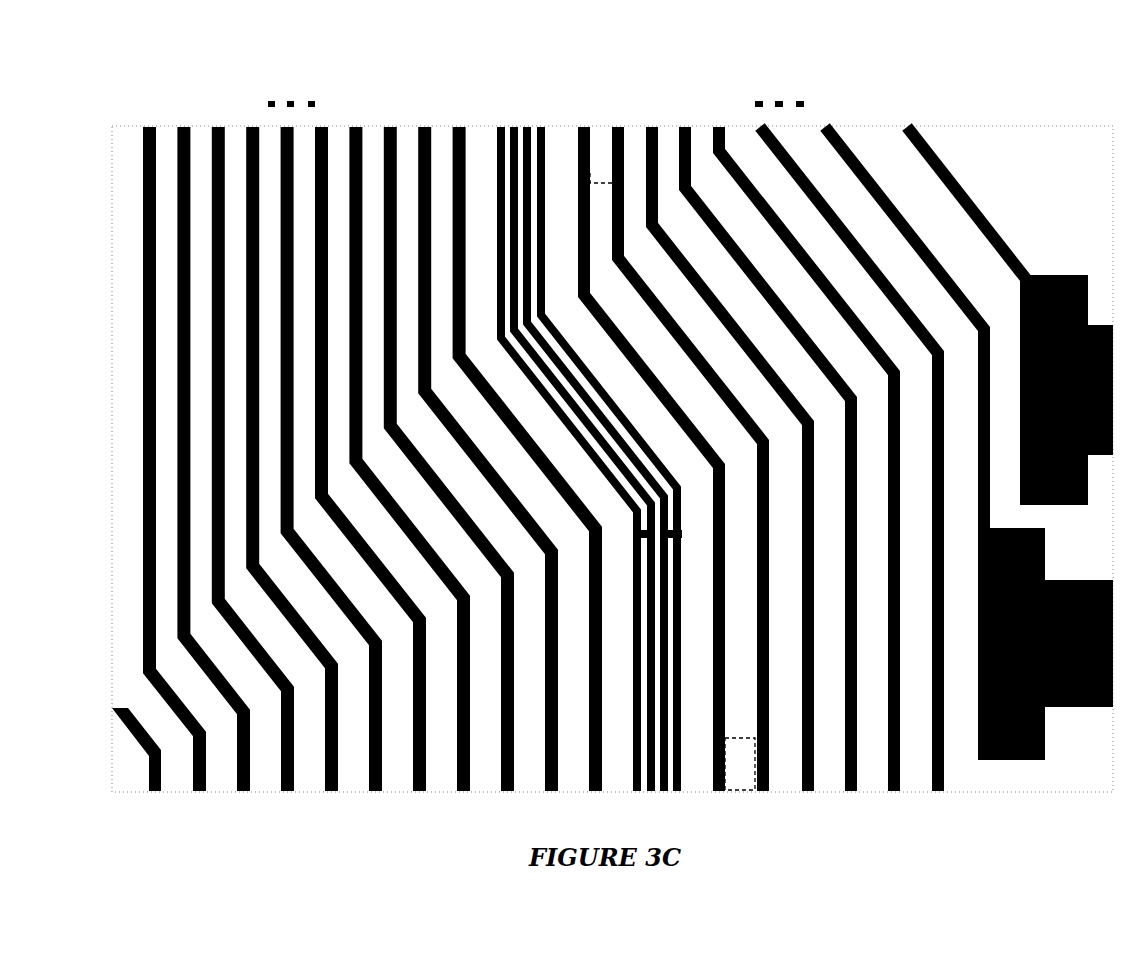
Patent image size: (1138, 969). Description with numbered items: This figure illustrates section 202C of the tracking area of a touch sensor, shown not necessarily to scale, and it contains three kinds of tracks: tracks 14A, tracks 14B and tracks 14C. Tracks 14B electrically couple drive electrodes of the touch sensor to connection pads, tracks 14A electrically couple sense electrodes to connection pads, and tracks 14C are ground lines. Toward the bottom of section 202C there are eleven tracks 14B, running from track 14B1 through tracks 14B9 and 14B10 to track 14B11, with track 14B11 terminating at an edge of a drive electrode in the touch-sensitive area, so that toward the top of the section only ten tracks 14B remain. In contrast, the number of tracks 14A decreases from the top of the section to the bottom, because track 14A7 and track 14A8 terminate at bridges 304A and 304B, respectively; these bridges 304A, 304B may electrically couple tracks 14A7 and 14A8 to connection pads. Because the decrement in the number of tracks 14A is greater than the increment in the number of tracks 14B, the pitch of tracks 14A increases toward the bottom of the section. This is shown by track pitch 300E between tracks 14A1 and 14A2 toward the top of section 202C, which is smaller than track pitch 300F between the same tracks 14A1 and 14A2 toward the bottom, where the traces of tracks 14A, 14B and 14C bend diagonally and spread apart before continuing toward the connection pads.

The track 14B10 is at (150, 121).
The track 14B9 is at (184, 121).
The track 14B1 is at (458, 121).
The track 14B11 is at (108, 748).
The tracks 14B is at (330, 434).
The tracks 14C is at (683, 797).
The tracks 14A is at (848, 452).
The track 14A1 is at (584, 121).
The track 14A2 is at (618, 121).
The track 14A7 is at (824, 121).
The track 14A8 is at (907, 121).
The track pitch 300E is at (603, 168).
The track pitch 300F is at (754, 802).
The section 202C is at (1037, 132).
The bridge 304A is at (1045, 271).
The bridge 304B is at (1060, 716).